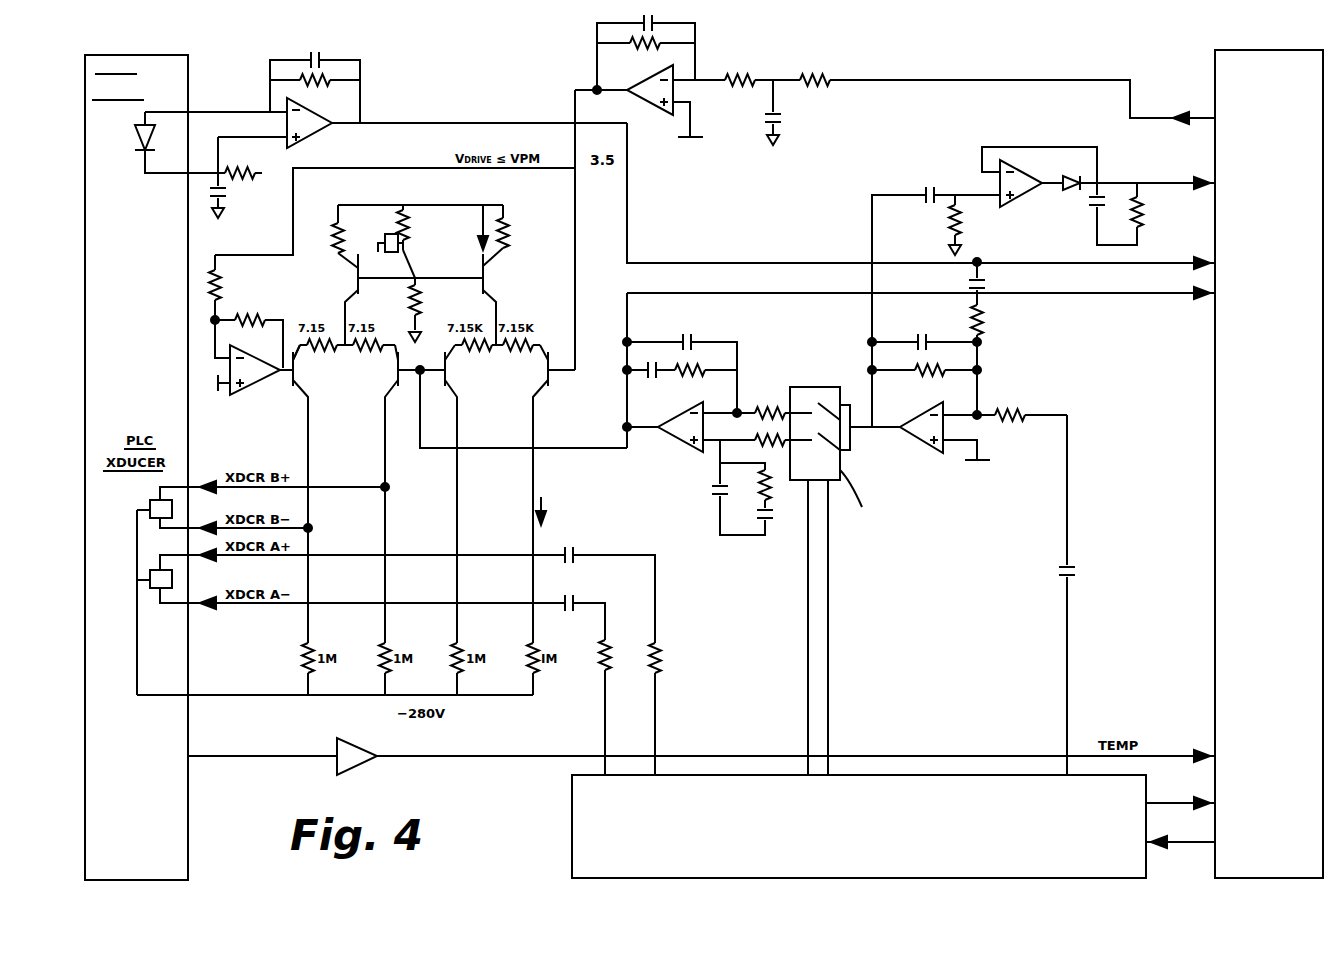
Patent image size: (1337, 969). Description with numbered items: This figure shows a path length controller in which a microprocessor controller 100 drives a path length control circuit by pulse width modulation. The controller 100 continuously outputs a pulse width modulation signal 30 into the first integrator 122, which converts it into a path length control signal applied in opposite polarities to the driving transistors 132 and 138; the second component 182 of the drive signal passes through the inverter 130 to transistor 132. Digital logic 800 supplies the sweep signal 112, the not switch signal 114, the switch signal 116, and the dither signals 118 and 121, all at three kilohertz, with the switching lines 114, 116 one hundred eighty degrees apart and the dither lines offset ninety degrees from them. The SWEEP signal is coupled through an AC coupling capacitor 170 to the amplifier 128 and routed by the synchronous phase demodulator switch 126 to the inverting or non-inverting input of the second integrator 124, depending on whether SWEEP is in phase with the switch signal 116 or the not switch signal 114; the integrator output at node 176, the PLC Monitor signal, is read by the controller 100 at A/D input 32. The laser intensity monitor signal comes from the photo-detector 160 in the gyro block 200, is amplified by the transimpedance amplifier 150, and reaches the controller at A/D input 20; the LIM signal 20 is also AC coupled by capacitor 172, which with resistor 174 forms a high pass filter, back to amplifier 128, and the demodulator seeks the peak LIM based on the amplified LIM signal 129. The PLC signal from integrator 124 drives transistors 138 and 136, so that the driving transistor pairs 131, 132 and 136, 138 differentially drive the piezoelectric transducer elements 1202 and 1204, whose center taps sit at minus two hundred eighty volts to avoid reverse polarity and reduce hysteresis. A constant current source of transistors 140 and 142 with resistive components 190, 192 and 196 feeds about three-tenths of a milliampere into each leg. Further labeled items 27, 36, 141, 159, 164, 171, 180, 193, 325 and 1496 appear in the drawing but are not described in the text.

The A/D input for laser intensity monitor signal 20 is at (718, 262).
The NBDI output 27 is at (271, 407).
The pulse width modulation signal 30 is at (878, 80).
The A/D input 32 is at (1097, 298).
The SBS output 36 is at (1145, 180).
The controller 100 is at (1274, 594).
The sweep line 112 is at (1068, 611).
The not switch signal line 114 is at (828, 636).
The switch signal line 116 is at (810, 615).
The first dither signal line 118 is at (660, 720).
The second dither signal line 121 is at (590, 729).
The first integrator 122 is at (695, 62).
The second integrator 124 is at (678, 441).
The synchronous phase demodulator switch 126 is at (805, 386).
The amplifier 128 is at (915, 462).
The amplified LIM signal 129 is at (862, 420).
The inverter 130 is at (262, 339).
The driving transistor 131 is at (405, 373).
The driving transistor 132 is at (298, 379).
The driving transistor 136 is at (449, 374).
The driving transistor 138 is at (545, 374).
The transistor 140 is at (356, 281).
The transistor 141 is at (410, 256).
The transistor 142 is at (487, 282).
The transimpedance amplifier 150 is at (345, 93).
The transistor terminal 159 is at (370, 255).
The photo-detector 160 is at (152, 137).
The resistor 164 is at (508, 224).
The AC coupling capacitor 170 is at (1075, 557).
The amplifier 171 is at (1025, 165).
The capacitor 172 is at (968, 285).
The resistor 174 is at (982, 305).
The node 176 is at (580, 451).
The wire 180 is at (294, 357).
The second component of drive signal 182 is at (222, 253).
The resistive component 190 is at (334, 240).
The resistive component 192 is at (400, 222).
The 10V reference node 193 is at (350, 204).
The resistive component 196 is at (407, 306).
The gyro block 200 is at (124, 132).
The BDI line 325 is at (535, 412).
The digital logic 800 is at (940, 844).
The piezoelectric transducer element 1202 is at (148, 496).
The piezoelectric transducer element 1204 is at (148, 594).
The microcontroller 1496 is at (1246, 42).